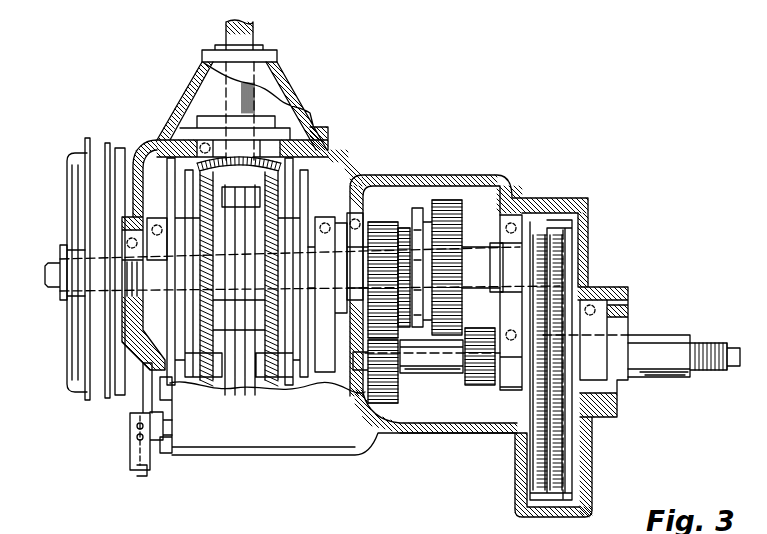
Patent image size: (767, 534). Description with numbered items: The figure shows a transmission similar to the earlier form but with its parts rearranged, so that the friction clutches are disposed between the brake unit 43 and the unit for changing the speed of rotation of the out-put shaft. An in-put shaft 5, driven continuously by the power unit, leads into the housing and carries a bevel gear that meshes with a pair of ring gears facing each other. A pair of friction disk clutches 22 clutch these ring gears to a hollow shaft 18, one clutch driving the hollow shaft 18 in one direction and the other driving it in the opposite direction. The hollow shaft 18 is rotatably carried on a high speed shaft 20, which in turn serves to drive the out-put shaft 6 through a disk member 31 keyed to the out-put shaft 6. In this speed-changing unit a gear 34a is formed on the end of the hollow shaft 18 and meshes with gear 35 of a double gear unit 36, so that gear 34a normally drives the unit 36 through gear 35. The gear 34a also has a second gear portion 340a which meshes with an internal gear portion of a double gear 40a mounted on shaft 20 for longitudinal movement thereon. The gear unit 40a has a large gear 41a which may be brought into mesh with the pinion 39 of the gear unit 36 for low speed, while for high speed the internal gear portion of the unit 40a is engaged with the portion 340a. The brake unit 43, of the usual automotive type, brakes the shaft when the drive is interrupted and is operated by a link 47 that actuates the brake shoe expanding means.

The in-put shaft 5 is at (237, 38).
The brake unit 43 is at (80, 203).
The high speed shaft 20 is at (80, 262).
The clutches 22 is at (192, 190).
The hollow shaft 18 is at (327, 219).
The gear 34a is at (378, 230).
The second gear portion 340a is at (403, 229).
The double gear 40a is at (425, 213).
The large gear 41a is at (455, 211).
The disk member 31 is at (565, 250).
The out-put shaft 6 is at (692, 352).
The gear 35 is at (382, 371).
The double gear unit 36 is at (432, 364).
The pinion 39 is at (480, 368).
The link 47 is at (138, 398).